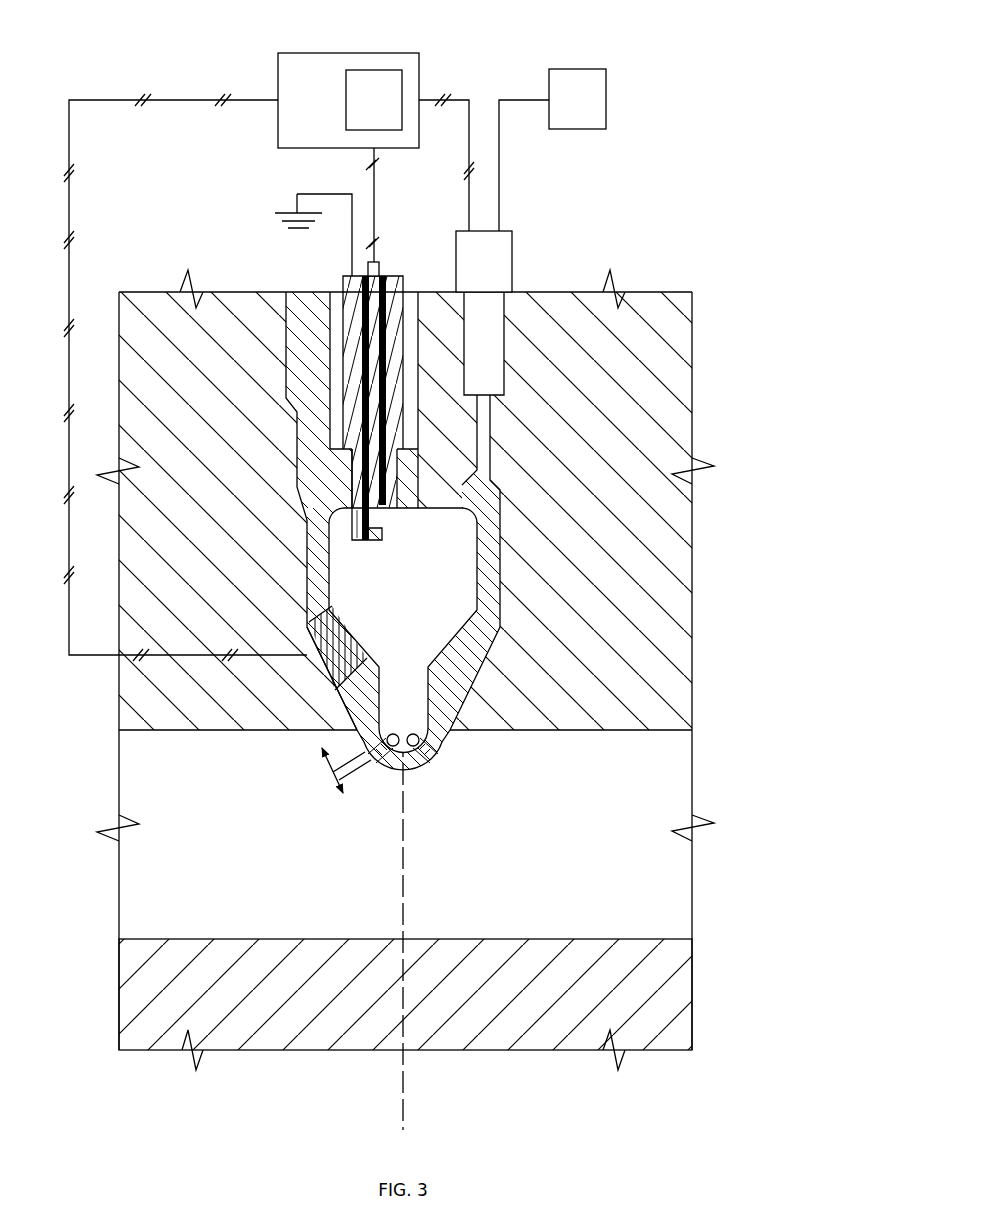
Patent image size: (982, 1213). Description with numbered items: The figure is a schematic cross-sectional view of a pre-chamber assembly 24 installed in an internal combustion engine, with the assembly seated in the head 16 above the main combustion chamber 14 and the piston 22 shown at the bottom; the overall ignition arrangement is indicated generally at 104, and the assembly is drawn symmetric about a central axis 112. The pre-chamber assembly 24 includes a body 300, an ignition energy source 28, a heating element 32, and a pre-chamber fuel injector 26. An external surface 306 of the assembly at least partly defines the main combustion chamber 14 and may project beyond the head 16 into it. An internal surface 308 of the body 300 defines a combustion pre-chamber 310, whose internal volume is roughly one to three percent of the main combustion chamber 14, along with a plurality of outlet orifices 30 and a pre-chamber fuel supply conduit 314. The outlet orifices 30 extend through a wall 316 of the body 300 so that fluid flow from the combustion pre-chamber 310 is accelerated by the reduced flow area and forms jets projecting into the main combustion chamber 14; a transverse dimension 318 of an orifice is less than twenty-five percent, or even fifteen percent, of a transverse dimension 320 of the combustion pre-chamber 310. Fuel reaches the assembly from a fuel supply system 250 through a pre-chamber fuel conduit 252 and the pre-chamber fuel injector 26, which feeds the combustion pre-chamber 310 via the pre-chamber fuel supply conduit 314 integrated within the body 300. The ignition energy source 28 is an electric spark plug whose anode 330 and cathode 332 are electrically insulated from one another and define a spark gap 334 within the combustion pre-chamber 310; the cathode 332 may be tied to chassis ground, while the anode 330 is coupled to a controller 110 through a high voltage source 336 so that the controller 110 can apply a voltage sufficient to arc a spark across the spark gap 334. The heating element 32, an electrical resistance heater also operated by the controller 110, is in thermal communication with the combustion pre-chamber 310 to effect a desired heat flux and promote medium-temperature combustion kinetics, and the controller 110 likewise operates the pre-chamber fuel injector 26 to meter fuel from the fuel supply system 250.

The main combustion chamber 14 is at (551, 838).
The head 16 is at (694, 603).
The piston 22 is at (499, 992).
The pre-chamber assembly 24 is at (266, 332).
The pre-chamber fuel injector 26 is at (512, 245).
The ignition energy source 28 is at (336, 283).
The outlet orifices 30 is at (434, 748).
The heating element 32 is at (311, 673).
The ignition system 104 is at (669, 57).
The controller 110 is at (300, 108).
The central axis 112 is at (405, 1110).
The fuel supply system 250 is at (564, 108).
The pre-chamber fuel conduit 252 is at (524, 98).
The body 300 is at (296, 462).
The external surface 306 is at (420, 769).
The internal surface 308 is at (448, 636).
The combustion pre-chamber 310 is at (372, 617).
The pre-chamber fuel supply conduit 314 is at (491, 441).
The wall 316 is at (395, 772).
The transverse dimension of outlet orifice 318 is at (330, 770).
The transverse dimension of combustion pre-chamber 320 is at (331, 585).
The anode 330 is at (381, 268).
The cathode 332 is at (352, 520).
The spark gap 334 is at (384, 522).
The high voltage source 336 is at (362, 108).